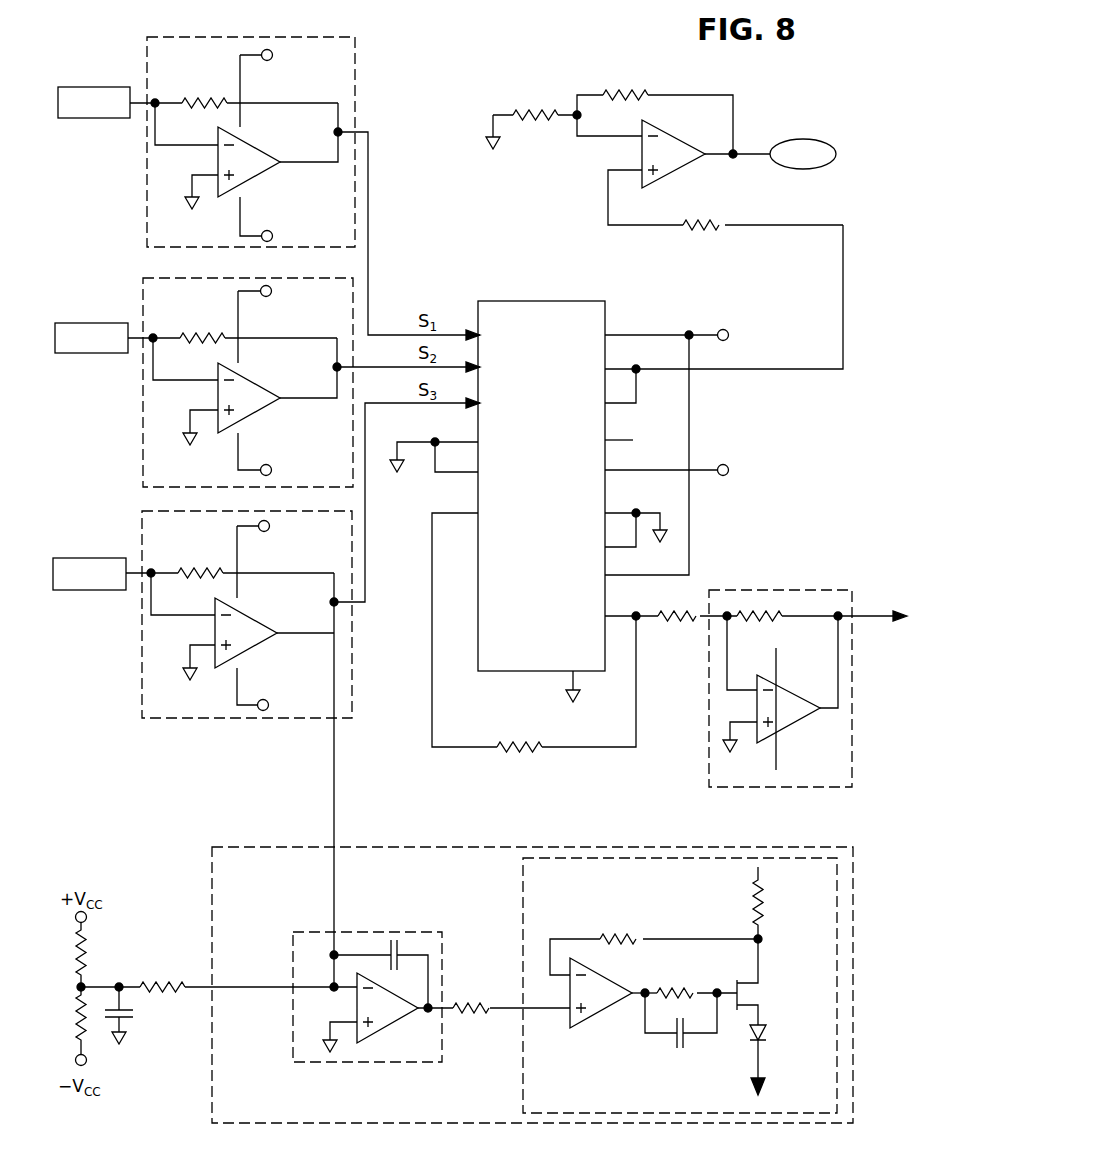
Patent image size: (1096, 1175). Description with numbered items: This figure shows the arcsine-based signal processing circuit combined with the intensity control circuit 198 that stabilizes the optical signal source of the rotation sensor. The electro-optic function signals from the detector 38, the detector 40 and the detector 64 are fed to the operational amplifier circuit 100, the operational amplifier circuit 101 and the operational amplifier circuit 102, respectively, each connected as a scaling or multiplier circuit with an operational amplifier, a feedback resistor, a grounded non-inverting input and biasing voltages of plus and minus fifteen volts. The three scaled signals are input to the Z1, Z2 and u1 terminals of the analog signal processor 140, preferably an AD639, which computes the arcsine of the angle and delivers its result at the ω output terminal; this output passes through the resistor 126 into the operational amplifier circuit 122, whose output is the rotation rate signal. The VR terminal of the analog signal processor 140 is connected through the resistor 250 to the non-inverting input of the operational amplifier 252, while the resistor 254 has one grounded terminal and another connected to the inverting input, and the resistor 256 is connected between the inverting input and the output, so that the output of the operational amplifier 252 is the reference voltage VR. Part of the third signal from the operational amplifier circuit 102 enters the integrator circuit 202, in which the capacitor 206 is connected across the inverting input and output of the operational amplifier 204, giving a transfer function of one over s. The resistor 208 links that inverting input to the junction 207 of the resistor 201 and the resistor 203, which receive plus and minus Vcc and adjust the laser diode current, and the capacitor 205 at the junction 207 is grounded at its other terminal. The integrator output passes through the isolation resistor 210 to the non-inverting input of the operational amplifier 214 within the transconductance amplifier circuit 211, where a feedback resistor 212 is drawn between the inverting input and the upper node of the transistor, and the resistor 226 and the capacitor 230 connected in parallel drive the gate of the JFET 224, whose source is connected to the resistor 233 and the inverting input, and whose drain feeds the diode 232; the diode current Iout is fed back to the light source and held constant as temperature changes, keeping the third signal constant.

The detector 38 is at (107, 86).
The detector 40 is at (100, 322).
The detector 64 is at (102, 557).
The operational amplifier circuit 100 is at (357, 58).
The operational amplifier circuit 101 is at (368, 312).
The operational amplifier circuit 102 is at (355, 645).
The analog signal processor 140 is at (548, 300).
The operational amplifier circuit 122 is at (820, 590).
The resistor 126 is at (690, 625).
The operational amplifier 252 is at (690, 172).
The resistor 254 is at (548, 110).
The resistor 256 is at (628, 90).
The resistor 250 is at (703, 232).
The intensity control circuit 198 is at (515, 846).
The resistor 201 is at (76, 950).
The resistor 203 is at (76, 1013).
The junction 207 is at (76, 987).
The capacitor 205 is at (130, 1015).
The resistor 208 is at (165, 982).
The integrator circuit 202 is at (290, 1015).
The operational amplifier 204 is at (378, 1032).
The capacitor 206 is at (400, 950).
The isolation resistor 210 is at (465, 1012).
The transconductance amplifier circuit 211 is at (523, 878).
The feedback resistor 212 is at (628, 940).
The operational amplifier 214 is at (595, 1020).
The resistor 226 is at (686, 990).
The capacitor 230 is at (690, 1040).
The JFET 224 is at (753, 993).
The diode 232 is at (766, 1035).
The resistor 233 is at (755, 900).